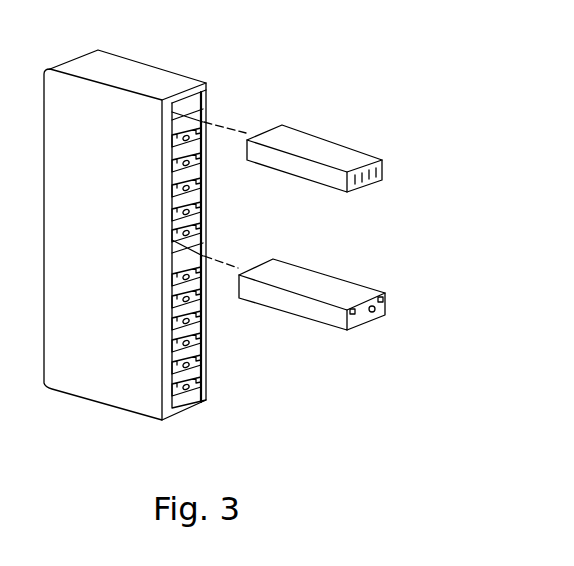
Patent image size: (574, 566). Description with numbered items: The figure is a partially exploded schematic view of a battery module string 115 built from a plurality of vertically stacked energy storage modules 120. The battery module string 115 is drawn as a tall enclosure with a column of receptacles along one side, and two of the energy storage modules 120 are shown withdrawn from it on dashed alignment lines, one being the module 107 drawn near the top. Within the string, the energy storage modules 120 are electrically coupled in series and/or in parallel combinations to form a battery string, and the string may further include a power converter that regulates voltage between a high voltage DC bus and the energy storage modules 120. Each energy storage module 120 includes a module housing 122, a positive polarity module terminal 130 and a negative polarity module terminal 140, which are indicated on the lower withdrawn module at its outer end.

The battery module string 115 is at (168, 46).
The pluggable module 107 is at (345, 140).
The energy storage module 120 is at (363, 266).
The module housing 122 is at (363, 290).
The positive polarity module terminal 130 is at (349, 314).
The negative polarity module terminal 140 is at (385, 301).